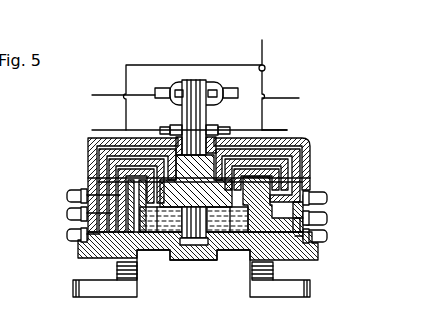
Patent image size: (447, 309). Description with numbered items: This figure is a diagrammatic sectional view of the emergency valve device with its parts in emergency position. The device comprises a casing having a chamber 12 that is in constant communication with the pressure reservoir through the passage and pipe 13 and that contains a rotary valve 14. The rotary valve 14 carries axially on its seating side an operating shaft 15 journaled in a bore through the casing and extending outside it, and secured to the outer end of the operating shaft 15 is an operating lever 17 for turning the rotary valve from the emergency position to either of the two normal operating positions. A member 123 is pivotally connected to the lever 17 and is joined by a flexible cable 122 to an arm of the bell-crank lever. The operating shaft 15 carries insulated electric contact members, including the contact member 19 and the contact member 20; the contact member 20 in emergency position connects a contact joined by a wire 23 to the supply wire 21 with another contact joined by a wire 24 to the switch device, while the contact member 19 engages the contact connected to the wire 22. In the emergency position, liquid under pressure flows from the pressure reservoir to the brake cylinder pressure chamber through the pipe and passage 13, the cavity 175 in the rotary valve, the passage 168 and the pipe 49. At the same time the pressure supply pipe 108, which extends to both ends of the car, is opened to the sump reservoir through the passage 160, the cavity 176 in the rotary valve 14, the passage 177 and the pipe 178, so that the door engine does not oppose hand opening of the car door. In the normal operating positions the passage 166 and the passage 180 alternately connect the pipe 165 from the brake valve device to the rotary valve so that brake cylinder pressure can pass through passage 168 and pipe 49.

The supply wire 21 is at (182, 65).
The wire 23 is at (265, 78).
The flexible cable 122 is at (110, 95).
The member 123 is at (182, 82).
The operating lever 17 is at (197, 97).
The operating shaft 15 is at (188, 113).
The contact member 19 is at (185, 130).
The contact member 20 is at (217, 128).
The wire 22 is at (110, 128).
The wire 24 is at (282, 130).
The passage 177 is at (92, 145).
The passage 168 is at (312, 145).
The passage 166 is at (107, 162).
The passage 180 is at (313, 158).
The passage and pipe 13 is at (310, 178).
The passage 160 is at (140, 181).
The chamber 12 is at (212, 243).
The pipe 178 is at (68, 191).
The pipe 165 is at (68, 212).
The pressure supply pipe 108 is at (68, 234).
The pipe 49 is at (327, 197).
The rotary valve 14 is at (188, 255).
The cavity 176 is at (163, 232).
The cavity 175 is at (231, 240).